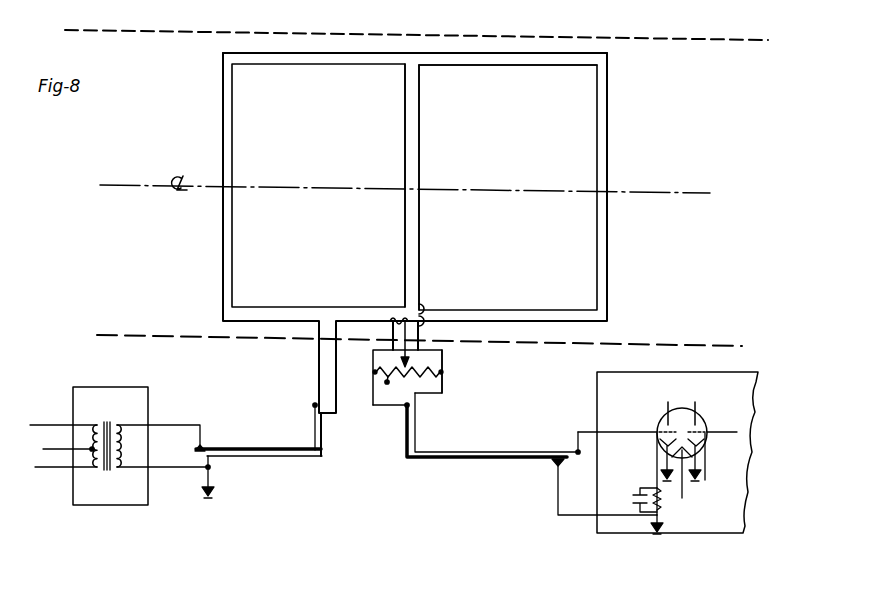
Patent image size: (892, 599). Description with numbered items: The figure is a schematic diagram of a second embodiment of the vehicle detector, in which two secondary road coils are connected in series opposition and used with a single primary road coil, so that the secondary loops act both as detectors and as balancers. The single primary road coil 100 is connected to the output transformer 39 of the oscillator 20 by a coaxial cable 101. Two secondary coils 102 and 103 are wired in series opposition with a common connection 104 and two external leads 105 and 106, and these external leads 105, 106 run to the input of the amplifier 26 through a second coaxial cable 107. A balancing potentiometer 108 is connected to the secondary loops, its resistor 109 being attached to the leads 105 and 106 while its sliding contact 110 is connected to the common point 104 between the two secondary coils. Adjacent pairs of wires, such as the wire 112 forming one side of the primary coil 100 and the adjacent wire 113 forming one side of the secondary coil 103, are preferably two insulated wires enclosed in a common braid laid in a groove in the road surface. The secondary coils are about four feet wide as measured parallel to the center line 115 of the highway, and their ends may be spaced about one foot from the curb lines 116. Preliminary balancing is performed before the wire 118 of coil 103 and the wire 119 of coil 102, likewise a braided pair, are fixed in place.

The oscillator 20 is at (166, 376).
The output transformer 39 is at (110, 428).
The amplifier 26 is at (702, 360).
The primary road coil 100 is at (607, 283).
The coaxial cable 101 is at (313, 427).
The secondary coil 102 is at (262, 263).
The secondary coil 103 is at (594, 248).
The common connection 104 is at (409, 314).
The external lead 105 is at (372, 356).
The external lead 106 is at (442, 352).
The coaxial cable 107 is at (418, 432).
The balancing potentiometer 108 is at (384, 383).
The resistor 109 is at (432, 380).
The sliding contact 110 is at (441, 372).
The wire 112 is at (592, 53).
The wire 113 is at (568, 67).
The center line 115 is at (628, 193).
The curb lines 116 is at (675, 41).
The wire 118 is at (420, 155).
The wire 119 is at (404, 228).